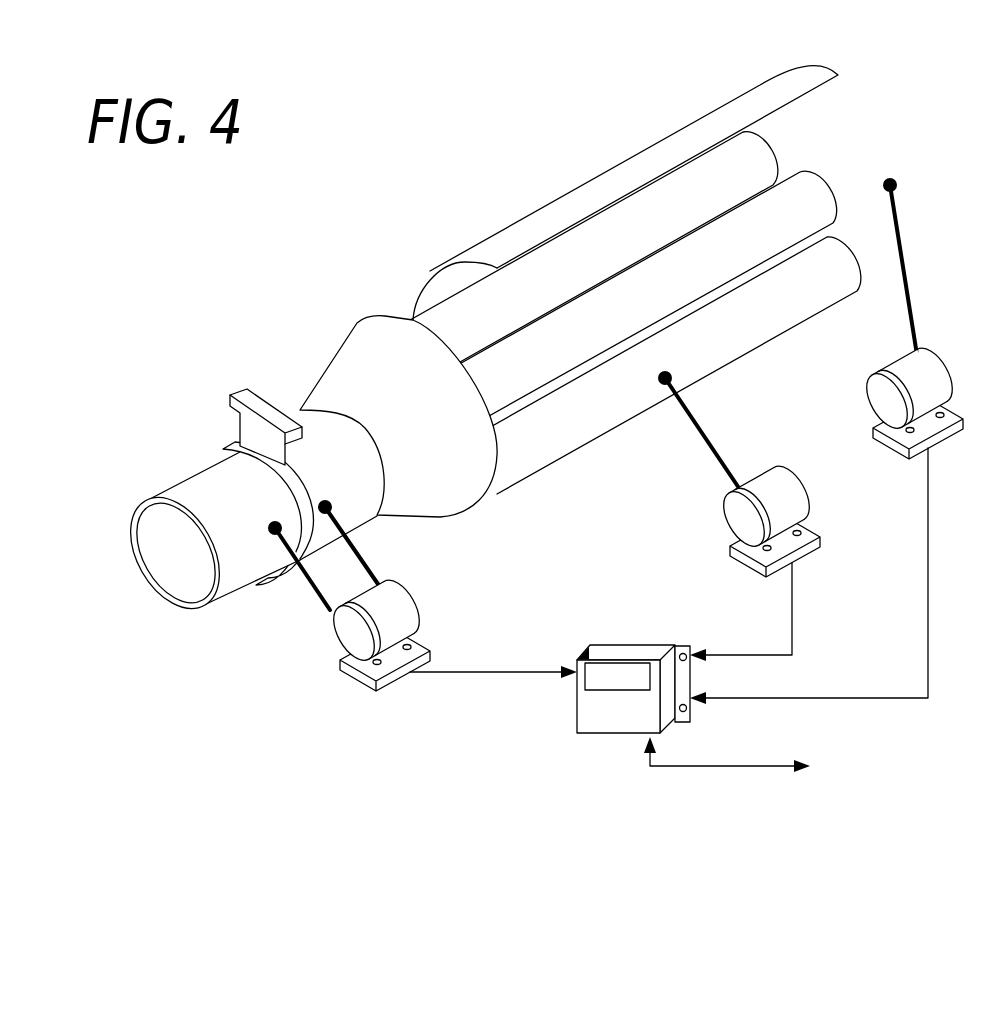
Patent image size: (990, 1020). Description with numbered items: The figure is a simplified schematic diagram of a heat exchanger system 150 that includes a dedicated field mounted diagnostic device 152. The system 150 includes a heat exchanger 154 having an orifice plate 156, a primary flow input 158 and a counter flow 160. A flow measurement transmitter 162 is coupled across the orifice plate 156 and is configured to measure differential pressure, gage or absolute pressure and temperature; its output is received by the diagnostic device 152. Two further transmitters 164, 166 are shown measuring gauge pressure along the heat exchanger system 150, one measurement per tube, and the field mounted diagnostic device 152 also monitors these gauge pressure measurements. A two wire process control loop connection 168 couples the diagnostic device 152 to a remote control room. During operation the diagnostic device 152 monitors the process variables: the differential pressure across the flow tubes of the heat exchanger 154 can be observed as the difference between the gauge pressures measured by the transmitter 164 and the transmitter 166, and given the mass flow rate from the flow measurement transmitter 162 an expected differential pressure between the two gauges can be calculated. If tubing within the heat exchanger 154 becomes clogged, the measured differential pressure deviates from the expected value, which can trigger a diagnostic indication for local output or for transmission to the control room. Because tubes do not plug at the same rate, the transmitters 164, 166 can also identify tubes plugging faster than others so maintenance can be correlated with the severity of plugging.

The heat exchanger system 150 is at (480, 159).
The field mounted diagnostic device 152 is at (643, 647).
The heat exchanger 154 is at (327, 367).
The orifice plate 156 is at (238, 432).
The primary flow input 158 is at (165, 567).
The counter flow 160 is at (450, 280).
The flow measurement transmitter 162 is at (341, 640).
The transmitter 164 is at (816, 433).
The transmitter 166 is at (847, 374).
The two wire process control loop connection 168 is at (707, 767).